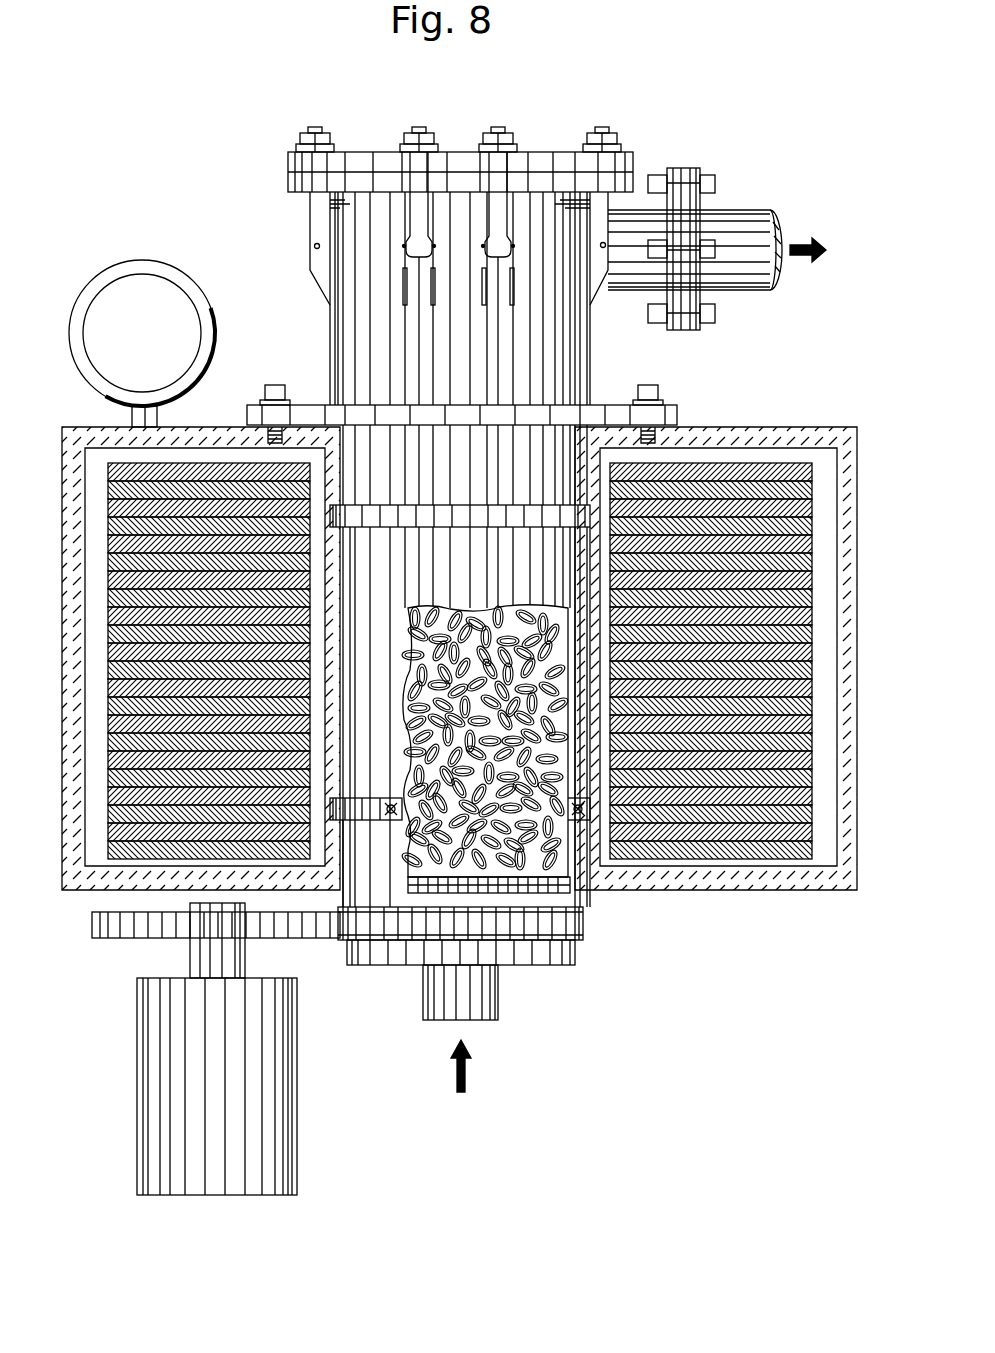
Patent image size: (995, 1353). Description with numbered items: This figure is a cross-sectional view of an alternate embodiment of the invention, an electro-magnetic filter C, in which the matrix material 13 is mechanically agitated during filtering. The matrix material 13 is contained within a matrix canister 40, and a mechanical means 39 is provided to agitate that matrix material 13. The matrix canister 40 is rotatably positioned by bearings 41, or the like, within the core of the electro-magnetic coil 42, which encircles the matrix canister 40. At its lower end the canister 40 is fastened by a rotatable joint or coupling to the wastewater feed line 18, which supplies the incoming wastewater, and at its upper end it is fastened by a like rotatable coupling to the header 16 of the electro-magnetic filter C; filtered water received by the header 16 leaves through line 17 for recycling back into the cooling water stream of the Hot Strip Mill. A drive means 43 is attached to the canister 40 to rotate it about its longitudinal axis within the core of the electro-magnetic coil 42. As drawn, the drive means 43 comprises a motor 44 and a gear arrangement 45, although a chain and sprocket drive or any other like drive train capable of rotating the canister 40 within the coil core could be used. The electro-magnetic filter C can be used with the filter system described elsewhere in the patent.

The electro-magnetic filter C is at (212, 235).
The matrix material 13 is at (460, 610).
The header 16 is at (340, 362).
The line 17 is at (730, 285).
The wastewater feed line 18 is at (500, 1000).
The mechanical means 39 is at (565, 970).
The matrix canister 40 is at (385, 967).
The bearings 41 is at (470, 516).
The electro-magnetic coil 42 is at (720, 830).
The drive means 43 is at (125, 1120).
The motor 44 is at (147, 1163).
The gear arrangement 45 is at (120, 940).